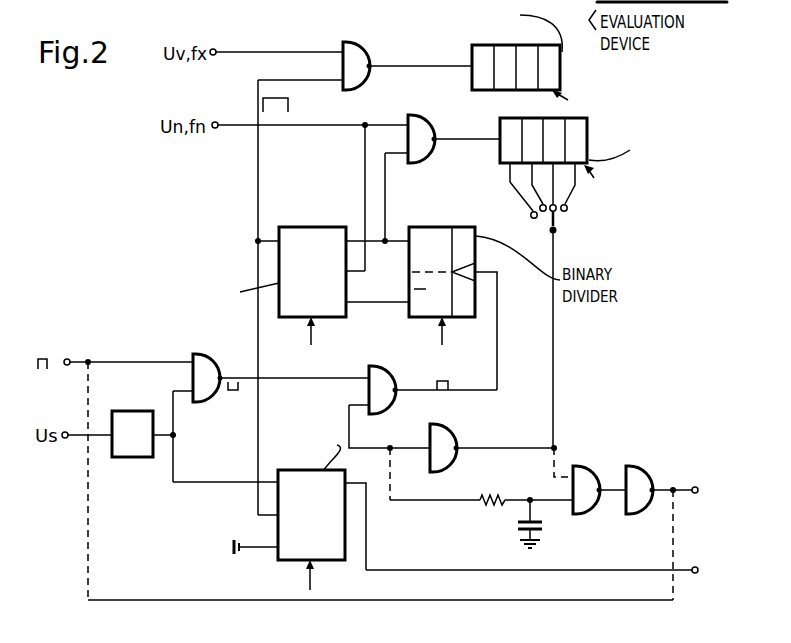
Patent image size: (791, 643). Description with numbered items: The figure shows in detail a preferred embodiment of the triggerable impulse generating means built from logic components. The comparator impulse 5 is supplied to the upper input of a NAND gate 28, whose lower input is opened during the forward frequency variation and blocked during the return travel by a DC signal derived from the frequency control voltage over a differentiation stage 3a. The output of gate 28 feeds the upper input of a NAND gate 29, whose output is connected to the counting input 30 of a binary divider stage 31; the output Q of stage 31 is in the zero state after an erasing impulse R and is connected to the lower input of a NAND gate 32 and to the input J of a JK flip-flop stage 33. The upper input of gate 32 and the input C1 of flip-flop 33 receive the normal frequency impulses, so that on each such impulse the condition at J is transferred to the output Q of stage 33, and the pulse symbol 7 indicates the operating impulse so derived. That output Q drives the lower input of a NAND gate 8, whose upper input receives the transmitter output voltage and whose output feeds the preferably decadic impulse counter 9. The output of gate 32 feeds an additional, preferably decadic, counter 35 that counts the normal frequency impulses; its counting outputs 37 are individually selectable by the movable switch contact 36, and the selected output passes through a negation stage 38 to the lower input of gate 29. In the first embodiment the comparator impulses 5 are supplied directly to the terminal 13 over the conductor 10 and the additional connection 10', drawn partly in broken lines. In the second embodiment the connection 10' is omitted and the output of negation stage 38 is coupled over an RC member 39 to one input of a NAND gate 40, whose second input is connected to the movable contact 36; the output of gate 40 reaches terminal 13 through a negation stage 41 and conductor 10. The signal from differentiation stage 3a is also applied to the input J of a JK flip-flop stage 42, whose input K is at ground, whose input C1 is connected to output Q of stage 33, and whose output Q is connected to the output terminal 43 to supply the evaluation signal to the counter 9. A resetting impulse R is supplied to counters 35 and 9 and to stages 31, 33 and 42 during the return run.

The comparator impulse 5 is at (115, 359).
The pulse signal 7 is at (282, 106).
The NAND gate 8 is at (407, 63).
The impulse counter 9 is at (483, 61).
The NAND gate 32 is at (442, 176).
The counter 35 is at (576, 142).
The counting outputs 37 is at (553, 178).
The movable switch contact 36 is at (557, 222).
The JK flip-flop stage 33 is at (310, 240).
The binary divider stage 31 is at (439, 240).
The counting input 30 is at (478, 318).
The NAND gate 28 is at (271, 367).
The NAND gate 29 is at (423, 398).
The negation stage 38 is at (486, 443).
The differentiation stage 3a is at (128, 488).
The RC member 39 is at (544, 524).
The NAND gate 40 is at (599, 500).
The negation stage 41 is at (659, 500).
The conductor 10 is at (682, 475).
The terminal 13 is at (711, 491).
The JK flip-flop stage 42 is at (310, 551).
The output terminal 43 is at (548, 577).
The additional connection 10' is at (380, 589).